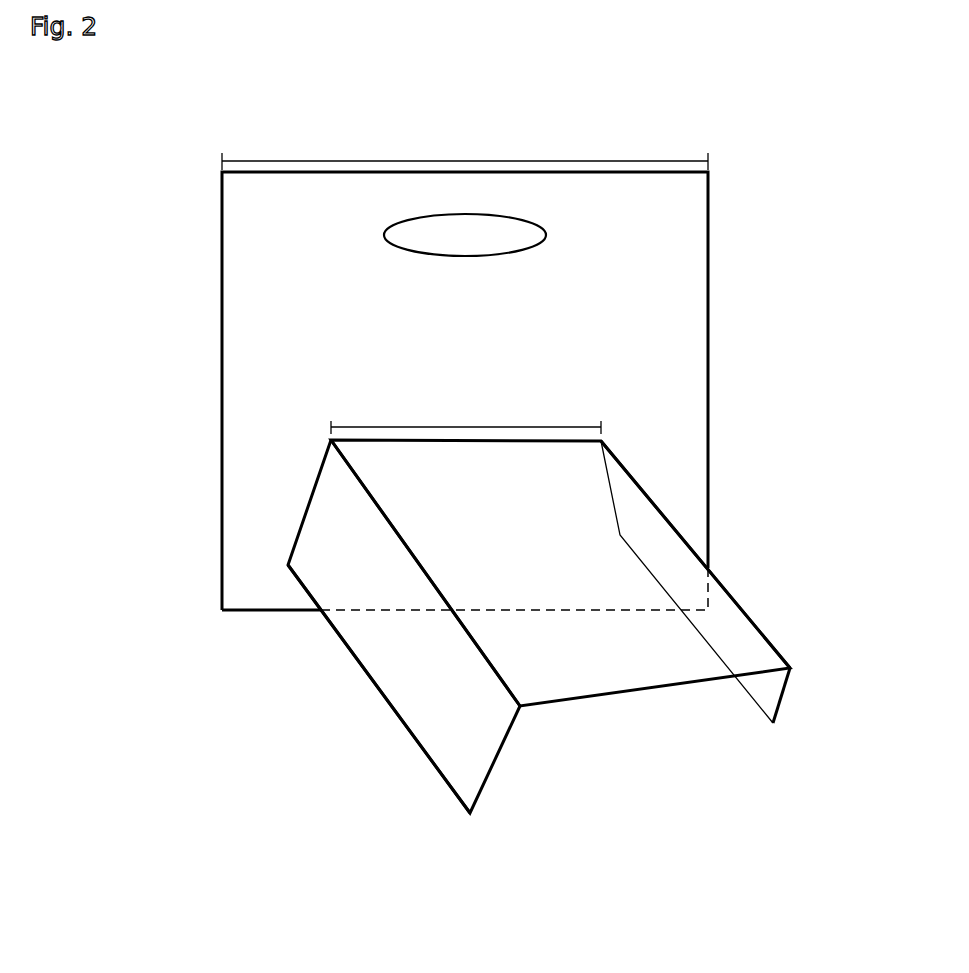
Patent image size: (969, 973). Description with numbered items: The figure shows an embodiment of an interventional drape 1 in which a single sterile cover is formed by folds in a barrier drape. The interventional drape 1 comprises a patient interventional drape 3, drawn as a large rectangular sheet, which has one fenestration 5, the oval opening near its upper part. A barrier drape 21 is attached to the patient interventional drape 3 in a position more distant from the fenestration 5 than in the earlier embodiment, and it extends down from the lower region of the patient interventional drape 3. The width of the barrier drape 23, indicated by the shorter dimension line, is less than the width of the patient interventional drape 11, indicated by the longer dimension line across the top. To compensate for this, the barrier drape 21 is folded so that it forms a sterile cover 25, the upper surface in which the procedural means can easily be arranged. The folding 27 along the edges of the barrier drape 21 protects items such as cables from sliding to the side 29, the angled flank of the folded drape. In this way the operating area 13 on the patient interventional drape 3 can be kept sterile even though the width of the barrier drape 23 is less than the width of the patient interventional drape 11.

The interventional drape 1 is at (168, 603).
The patient interventional drape 3 is at (710, 525).
The fenestration 5 is at (485, 235).
The width of the patient interventional drape 11 is at (465, 158).
The operating area 13 is at (665, 407).
The barrier drape 21 is at (603, 700).
The width of the barrier drape 23 is at (563, 424).
The sterile cover 25 is at (568, 480).
The folding 27 is at (523, 712).
The side 29 is at (455, 745).